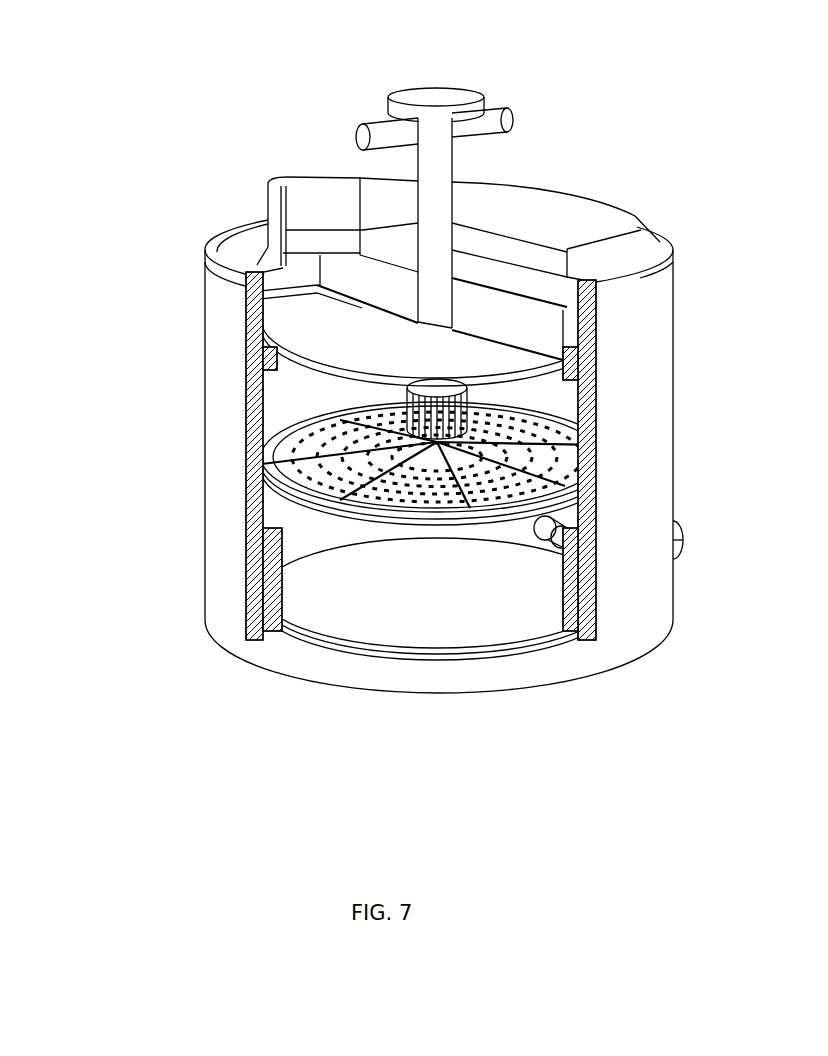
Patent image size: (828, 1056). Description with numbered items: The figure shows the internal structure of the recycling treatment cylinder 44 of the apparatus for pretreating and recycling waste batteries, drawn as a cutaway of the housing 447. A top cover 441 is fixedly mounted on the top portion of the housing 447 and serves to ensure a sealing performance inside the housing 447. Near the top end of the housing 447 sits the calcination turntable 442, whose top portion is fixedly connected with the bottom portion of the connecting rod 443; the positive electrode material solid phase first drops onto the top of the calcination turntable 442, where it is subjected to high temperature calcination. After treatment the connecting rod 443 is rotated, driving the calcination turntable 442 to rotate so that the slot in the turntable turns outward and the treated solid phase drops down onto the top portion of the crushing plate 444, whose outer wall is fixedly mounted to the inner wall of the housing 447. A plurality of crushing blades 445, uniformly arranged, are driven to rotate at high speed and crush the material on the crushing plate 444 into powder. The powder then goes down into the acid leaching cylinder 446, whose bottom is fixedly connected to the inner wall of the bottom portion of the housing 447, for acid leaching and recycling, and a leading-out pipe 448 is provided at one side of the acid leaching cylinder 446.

The recycling treatment cylinder 44 is at (366, 433).
The top cover 441 is at (262, 217).
The calcination turntable 442 is at (290, 360).
The connecting rod 443 is at (433, 257).
The crushing plate 444 is at (405, 430).
The crushing blade 445 is at (445, 453).
The acid leaching cylinder 446 is at (490, 650).
The housing 447 is at (222, 427).
The leading-out pipe 448 is at (560, 522).